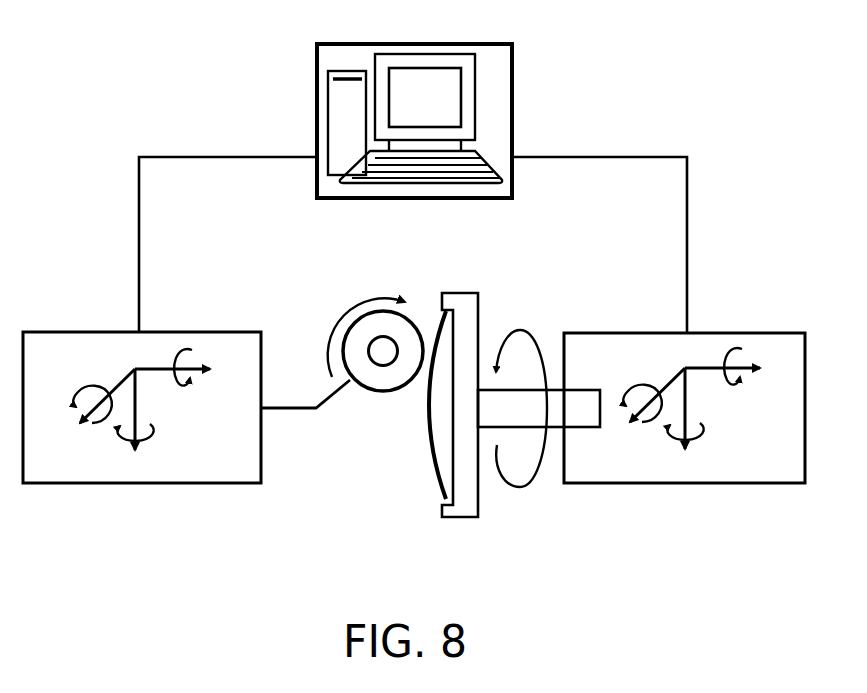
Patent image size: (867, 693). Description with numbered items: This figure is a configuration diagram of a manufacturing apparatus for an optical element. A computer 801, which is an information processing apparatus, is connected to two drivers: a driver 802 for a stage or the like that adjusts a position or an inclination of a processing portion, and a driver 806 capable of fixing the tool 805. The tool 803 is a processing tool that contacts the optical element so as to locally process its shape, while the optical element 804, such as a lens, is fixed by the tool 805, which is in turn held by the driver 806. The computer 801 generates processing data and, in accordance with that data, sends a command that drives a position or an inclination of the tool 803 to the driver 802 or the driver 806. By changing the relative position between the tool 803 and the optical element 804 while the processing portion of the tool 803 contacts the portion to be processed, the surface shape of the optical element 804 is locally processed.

The computer 801 is at (512, 115).
The driver 802 is at (167, 483).
The tool 803 is at (376, 392).
The optical element 804 is at (440, 487).
The tool 805 is at (478, 517).
The driver 806 is at (718, 333).